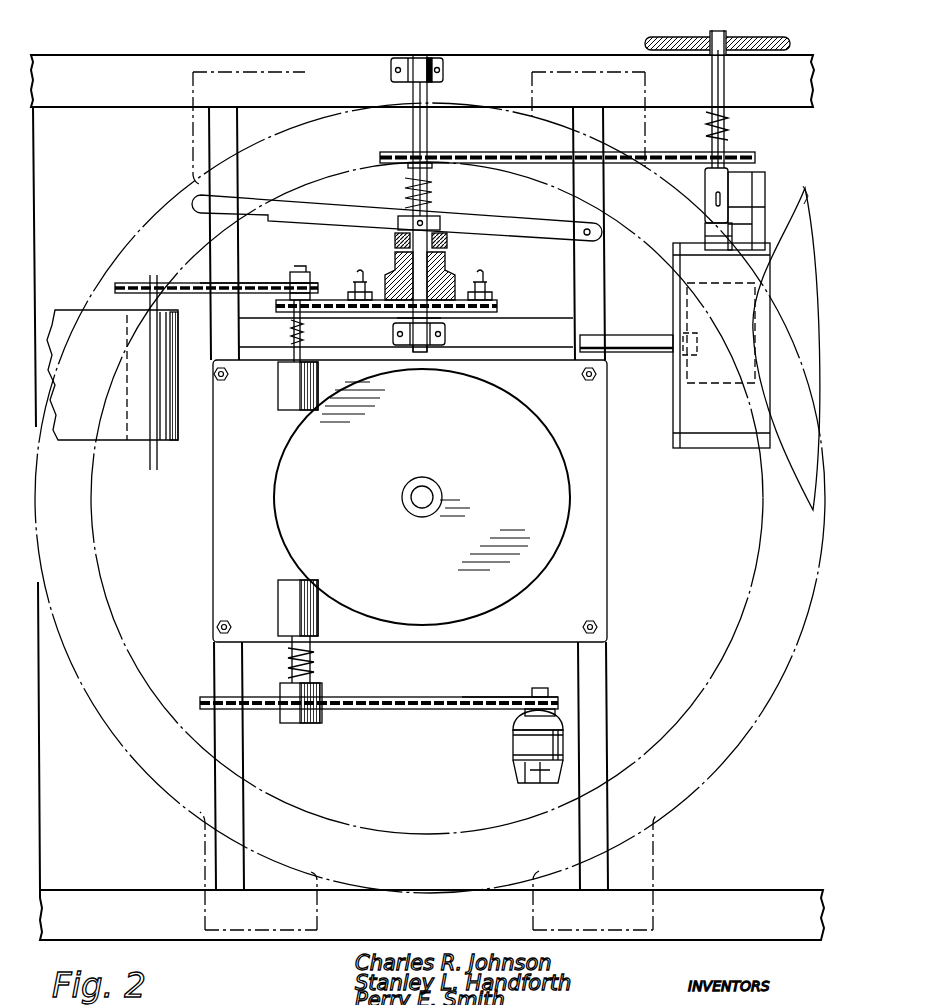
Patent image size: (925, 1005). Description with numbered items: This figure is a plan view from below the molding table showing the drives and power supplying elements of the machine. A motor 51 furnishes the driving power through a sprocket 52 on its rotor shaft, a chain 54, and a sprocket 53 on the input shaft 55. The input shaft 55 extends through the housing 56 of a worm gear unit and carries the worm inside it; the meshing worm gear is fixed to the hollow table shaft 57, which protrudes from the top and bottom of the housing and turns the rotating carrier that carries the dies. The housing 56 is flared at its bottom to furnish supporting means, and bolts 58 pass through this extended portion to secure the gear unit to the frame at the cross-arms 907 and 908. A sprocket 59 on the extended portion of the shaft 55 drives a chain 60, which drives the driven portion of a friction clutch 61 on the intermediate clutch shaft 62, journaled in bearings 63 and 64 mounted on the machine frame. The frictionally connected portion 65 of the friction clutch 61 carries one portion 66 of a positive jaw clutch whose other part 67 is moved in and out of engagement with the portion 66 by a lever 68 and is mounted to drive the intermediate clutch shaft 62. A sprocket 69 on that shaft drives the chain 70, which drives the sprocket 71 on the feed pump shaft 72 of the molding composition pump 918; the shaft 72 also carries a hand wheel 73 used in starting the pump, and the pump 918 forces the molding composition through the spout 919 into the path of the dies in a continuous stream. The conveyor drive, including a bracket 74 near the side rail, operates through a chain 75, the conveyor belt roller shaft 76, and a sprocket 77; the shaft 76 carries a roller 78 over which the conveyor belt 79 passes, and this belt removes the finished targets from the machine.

The motor 51 is at (513, 748).
The sprocket 52 is at (552, 678).
The sprocket 53 is at (390, 683).
The chain 54 is at (470, 684).
The input shaft 55 is at (287, 365).
The worm gear unit housing 56 is at (280, 607).
The hollow table shaft 57 is at (438, 508).
The bolts 58 is at (216, 378).
The sprocket 59 is at (292, 312).
The chain 60 is at (338, 316).
The friction clutch 61 is at (489, 296).
The intermediate clutch shaft 62 is at (432, 138).
The bearing 63 is at (445, 336).
The bearing 64 is at (432, 58).
The frictionally connected portion 65 is at (450, 275).
The jaw clutch portion 66 is at (393, 268).
The jaw clutch part 67 is at (395, 240).
The lever 68 is at (328, 212).
The sprocket 69 is at (412, 160).
The chain 70 is at (510, 153).
The sprocket 71 is at (738, 160).
The feed pump shaft 72 is at (725, 96).
The hand wheel 73 is at (748, 45).
The rail bracket 74 is at (305, 280).
The chain 75 is at (262, 283).
The conveyor belt roller shaft 76 is at (157, 278).
The sprocket 77 is at (118, 284).
The roller 78 is at (174, 444).
The conveyor belt 79 is at (120, 440).
The cross-arm 907 is at (230, 784).
The cross-arm 908 is at (598, 698).
The pump 918 is at (692, 373).
The spout 919 is at (620, 340).